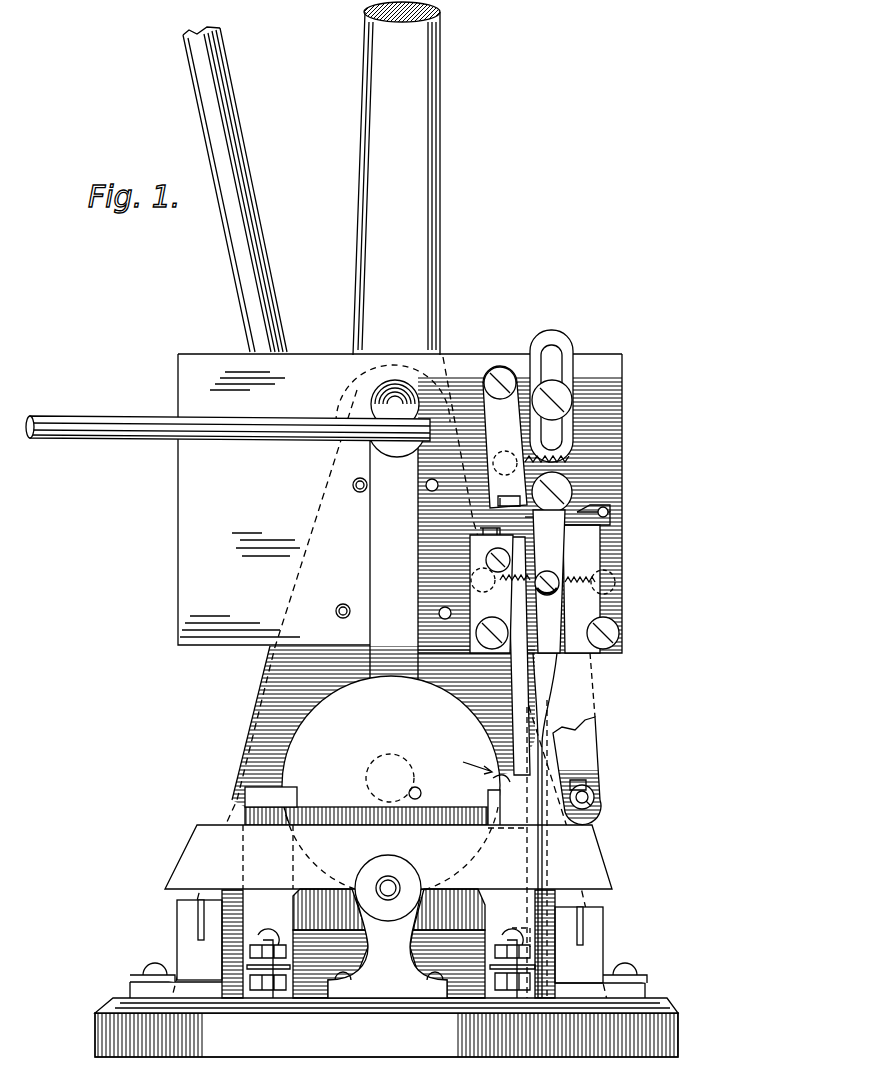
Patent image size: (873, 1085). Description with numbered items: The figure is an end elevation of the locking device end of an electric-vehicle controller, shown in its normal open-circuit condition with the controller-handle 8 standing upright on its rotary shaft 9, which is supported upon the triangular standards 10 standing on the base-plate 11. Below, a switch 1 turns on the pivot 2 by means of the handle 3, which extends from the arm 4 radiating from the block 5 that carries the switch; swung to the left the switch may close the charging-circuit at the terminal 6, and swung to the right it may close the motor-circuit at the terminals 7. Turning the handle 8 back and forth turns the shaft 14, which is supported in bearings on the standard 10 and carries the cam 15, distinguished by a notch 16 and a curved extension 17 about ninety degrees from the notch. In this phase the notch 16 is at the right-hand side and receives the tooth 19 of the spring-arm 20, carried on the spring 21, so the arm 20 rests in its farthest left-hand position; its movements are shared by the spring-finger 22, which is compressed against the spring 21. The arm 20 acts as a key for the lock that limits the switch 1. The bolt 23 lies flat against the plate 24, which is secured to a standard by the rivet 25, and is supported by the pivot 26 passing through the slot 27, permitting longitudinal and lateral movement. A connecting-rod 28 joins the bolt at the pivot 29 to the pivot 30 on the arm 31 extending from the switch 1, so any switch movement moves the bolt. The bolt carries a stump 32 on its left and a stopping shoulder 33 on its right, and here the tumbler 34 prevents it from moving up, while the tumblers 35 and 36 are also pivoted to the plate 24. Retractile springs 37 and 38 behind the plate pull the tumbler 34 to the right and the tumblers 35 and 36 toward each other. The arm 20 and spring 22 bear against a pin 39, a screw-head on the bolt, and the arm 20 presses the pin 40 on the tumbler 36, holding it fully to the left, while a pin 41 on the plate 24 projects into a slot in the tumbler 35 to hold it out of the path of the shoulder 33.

The switch 1 is at (388, 857).
The pivot 2 is at (388, 888).
The handle 3 is at (60, 438).
The arm 4 is at (394, 624).
The block 5 is at (307, 810).
The charging-terminal 6 is at (186, 944).
The motor-terminal 7 is at (591, 944).
The controller-handle 8 is at (396, 178).
The rotary shaft 9 is at (372, 396).
The triangular standards 10 is at (262, 708).
The base-plate 11 is at (678, 1040).
The shaft 14 is at (386, 756).
The cam 15 is at (391, 785).
The notch 16 is at (457, 760).
The curved extension 17 is at (389, 943).
The tooth 19 is at (490, 778).
The spring-arm 20 is at (517, 700).
The spring 21 is at (538, 871).
The spring-finger 22 is at (568, 685).
The bolt 23 is at (583, 331).
The plate 24 is at (400, 499).
The rivet 25 is at (362, 493).
The pivot 26 is at (570, 395).
The slot 27 is at (548, 352).
The connecting-rod 28 is at (592, 745).
The pivot 29 is at (575, 486).
The pivot 30 is at (593, 806).
The arm 31 is at (587, 786).
The stump 32 is at (527, 514).
The stopping shoulder 33 is at (590, 507).
The tumbler 34 is at (505, 437).
The tumbler 35 is at (591, 582).
The tumbler 36 is at (500, 590).
The retractile spring 37 is at (526, 457).
The retractile spring 38 is at (612, 578).
The pin 39 is at (561, 560).
The pin 40 is at (490, 558).
The pin 41 is at (609, 515).